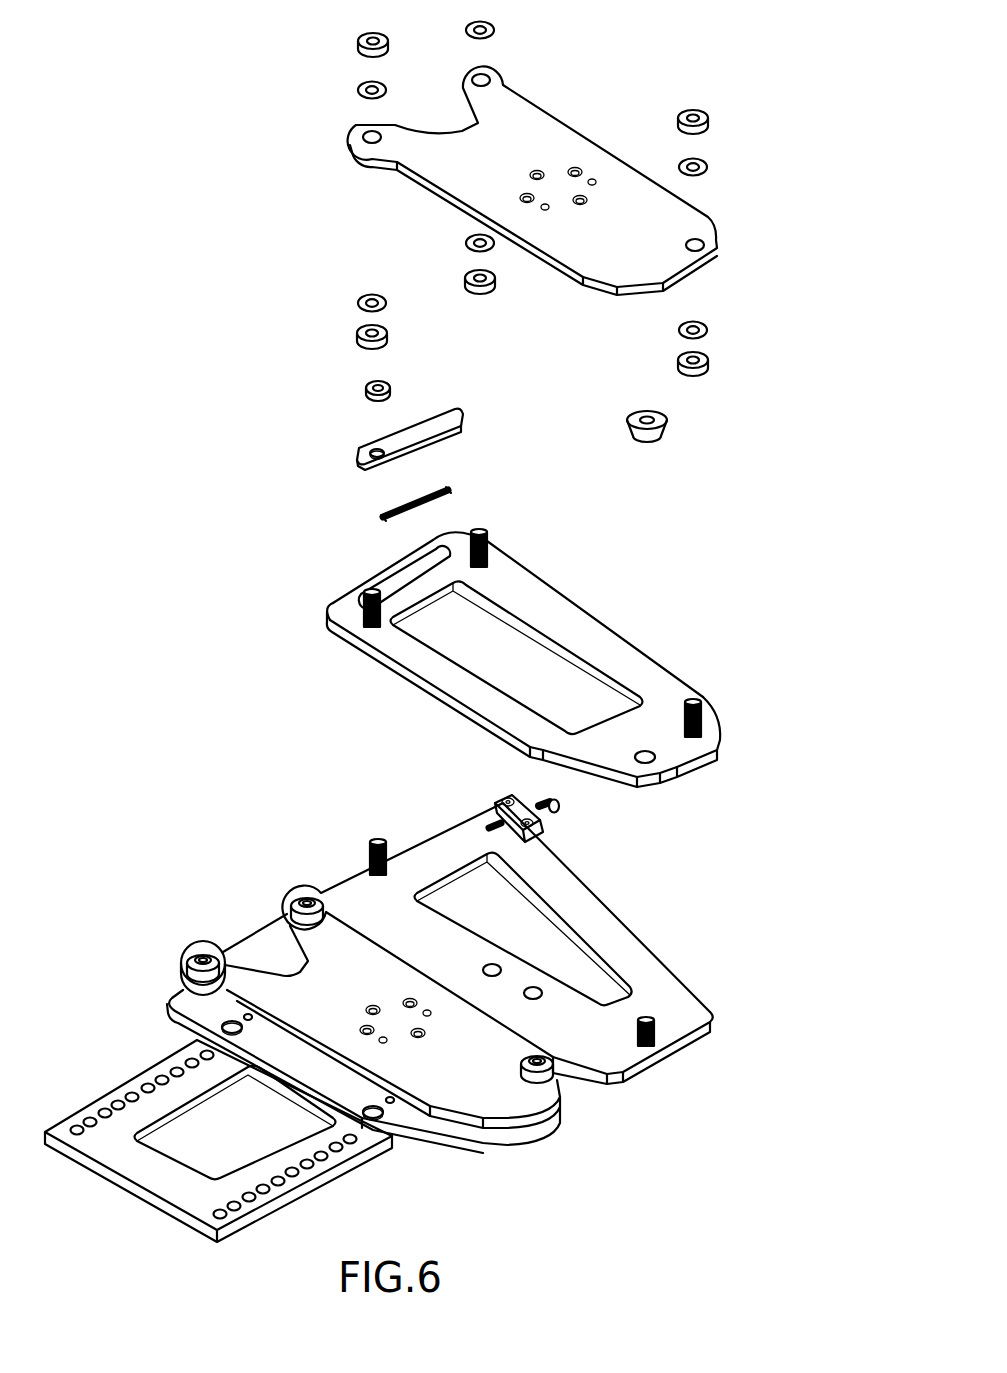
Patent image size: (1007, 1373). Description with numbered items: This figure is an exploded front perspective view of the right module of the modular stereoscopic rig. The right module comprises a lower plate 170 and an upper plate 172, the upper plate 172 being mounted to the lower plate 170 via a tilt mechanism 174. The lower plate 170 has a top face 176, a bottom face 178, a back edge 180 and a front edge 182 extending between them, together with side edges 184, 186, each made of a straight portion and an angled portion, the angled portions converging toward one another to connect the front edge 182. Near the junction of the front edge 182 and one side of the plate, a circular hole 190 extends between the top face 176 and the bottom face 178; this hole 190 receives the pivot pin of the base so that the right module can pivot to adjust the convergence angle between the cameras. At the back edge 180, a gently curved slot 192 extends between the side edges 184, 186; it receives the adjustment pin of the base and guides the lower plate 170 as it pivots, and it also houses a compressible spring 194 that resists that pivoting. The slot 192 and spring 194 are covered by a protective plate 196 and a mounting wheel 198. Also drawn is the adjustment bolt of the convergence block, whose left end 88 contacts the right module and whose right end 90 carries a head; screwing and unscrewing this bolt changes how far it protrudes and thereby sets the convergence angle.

The left end 88 is at (480, 830).
The right end 90 is at (565, 807).
The lower plate 170 is at (517, 654).
The upper plate 172 is at (553, 102).
The tilt mechanism 174 is at (517, 654).
The top face 176 is at (665, 742).
The bottom face 178 is at (450, 705).
The back edge 180 is at (407, 560).
The front edge 182 is at (690, 770).
The side edge 184 is at (393, 660).
The side edge 186 is at (648, 662).
The circular hole 190 is at (653, 757).
The slot 192 is at (438, 552).
The compressible spring 194 is at (443, 485).
The protective plate 196 is at (443, 420).
The mounting wheel 198 is at (364, 387).